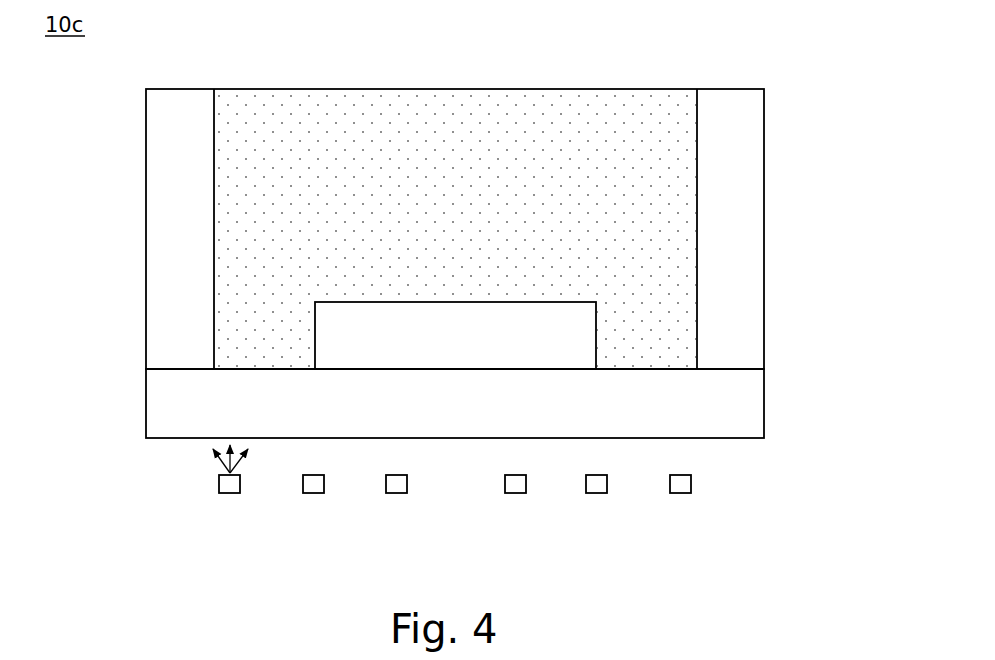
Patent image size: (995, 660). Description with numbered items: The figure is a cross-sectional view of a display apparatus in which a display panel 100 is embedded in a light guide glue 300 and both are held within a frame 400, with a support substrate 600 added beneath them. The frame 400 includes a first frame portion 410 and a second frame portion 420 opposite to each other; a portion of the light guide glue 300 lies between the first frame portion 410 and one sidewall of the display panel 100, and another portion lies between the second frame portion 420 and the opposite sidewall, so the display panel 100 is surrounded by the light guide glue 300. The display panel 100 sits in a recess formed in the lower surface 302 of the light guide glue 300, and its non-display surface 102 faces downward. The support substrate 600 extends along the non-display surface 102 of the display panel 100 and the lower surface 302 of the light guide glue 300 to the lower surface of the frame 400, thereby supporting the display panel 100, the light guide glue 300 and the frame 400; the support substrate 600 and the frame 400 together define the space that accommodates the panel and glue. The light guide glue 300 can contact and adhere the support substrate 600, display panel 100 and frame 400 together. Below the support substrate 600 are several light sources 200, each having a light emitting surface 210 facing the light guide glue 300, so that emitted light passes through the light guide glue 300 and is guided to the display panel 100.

The display panel 100 is at (472, 345).
The non-display surface 102 is at (442, 370).
The light sources 200 is at (396, 493).
The light emitting surface 210 is at (218, 485).
The light guide glue 300 is at (263, 108).
The lower surface 302 is at (648, 369).
The frame 400 is at (122, 145).
The first frame portion 410 is at (157, 232).
The second frame portion 420 is at (753, 230).
The support substrate 600 is at (753, 405).